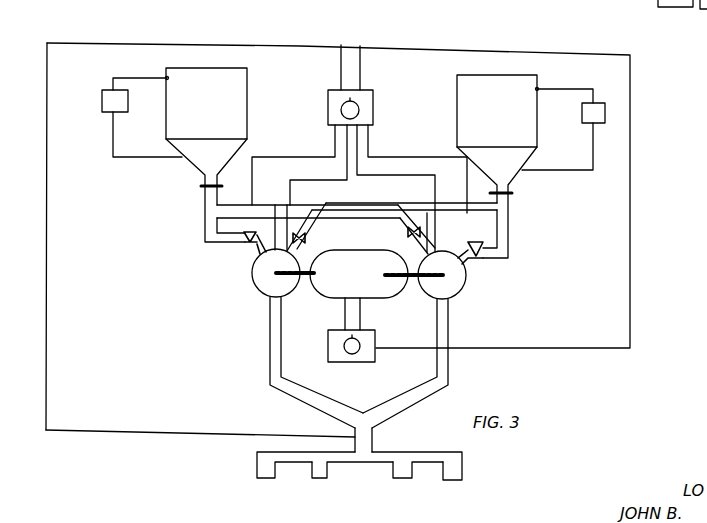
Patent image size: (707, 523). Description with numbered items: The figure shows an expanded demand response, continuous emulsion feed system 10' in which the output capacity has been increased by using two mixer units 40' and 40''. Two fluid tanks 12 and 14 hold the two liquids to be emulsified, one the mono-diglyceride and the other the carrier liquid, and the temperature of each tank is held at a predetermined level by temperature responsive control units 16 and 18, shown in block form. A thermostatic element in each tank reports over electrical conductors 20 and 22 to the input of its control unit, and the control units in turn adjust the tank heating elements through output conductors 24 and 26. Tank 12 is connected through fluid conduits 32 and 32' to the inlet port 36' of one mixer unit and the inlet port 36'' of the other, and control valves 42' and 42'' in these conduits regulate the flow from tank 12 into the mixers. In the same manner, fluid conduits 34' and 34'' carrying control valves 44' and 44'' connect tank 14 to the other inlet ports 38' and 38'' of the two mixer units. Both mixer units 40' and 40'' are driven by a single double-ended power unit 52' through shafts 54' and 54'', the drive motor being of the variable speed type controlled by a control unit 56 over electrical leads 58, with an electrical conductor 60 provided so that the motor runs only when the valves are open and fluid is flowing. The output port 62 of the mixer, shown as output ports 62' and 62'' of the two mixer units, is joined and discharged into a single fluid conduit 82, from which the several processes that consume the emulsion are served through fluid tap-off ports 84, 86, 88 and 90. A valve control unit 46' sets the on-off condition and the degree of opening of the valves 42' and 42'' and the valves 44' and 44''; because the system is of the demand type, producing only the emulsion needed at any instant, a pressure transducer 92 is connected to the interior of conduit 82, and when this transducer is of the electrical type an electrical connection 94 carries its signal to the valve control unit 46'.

The demand response, continuous emulsion feed system 10' is at (354, 46).
The fluid tank 12 is at (221, 114).
The fluid tank 14 is at (508, 116).
The control unit 16 is at (105, 94).
The control unit 18 is at (596, 103).
The electrical conductor 20 is at (136, 78).
The electrical conductor 22 is at (572, 89).
The electrical conductor 24 is at (148, 157).
The electrical conductor 26 is at (584, 169).
The fluid conduit 32 is at (308, 199).
The fluid conduit 32' is at (205, 214).
The fluid conduit 34' is at (404, 193).
The fluid conduit 34'' is at (515, 225).
The inlet port 36' is at (273, 219).
The inlet port 36'' is at (446, 232).
The inlet port 38' is at (448, 253).
The inlet port 38'' is at (306, 219).
The mixer unit 40' is at (258, 274).
The mixer unit 40'' is at (461, 288).
The control valve 42' is at (238, 253).
The control valve 42'' is at (395, 238).
The control valve 44' is at (320, 236).
The control valve 44'' is at (499, 259).
The valve control unit 46' is at (359, 162).
The double-ended power unit 52' is at (360, 274).
The shaft 54' is at (301, 296).
The shaft 54'' is at (411, 299).
The control unit 56 is at (340, 364).
The electrical leads 58 is at (343, 312).
The electrical conductor 60 is at (632, 175).
The output port 62 is at (666, 18).
The output port 62' is at (296, 362).
The output port 62'' is at (425, 363).
The fluid conduit 82 is at (375, 430).
The fluid tap-off port 84 is at (262, 480).
The fluid tap-off port 86 is at (323, 480).
The fluid tap-off port 88 is at (400, 480).
The fluid tap-off port 90 is at (450, 482).
The pressure transducer 92 is at (353, 434).
The electrical connection 94 is at (47, 256).